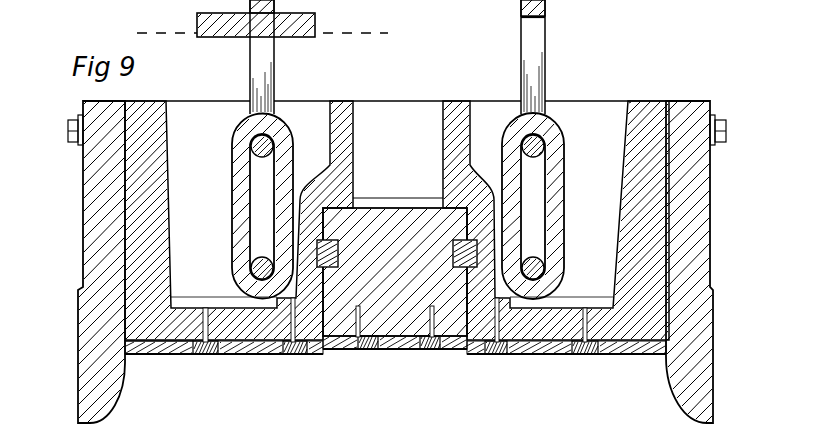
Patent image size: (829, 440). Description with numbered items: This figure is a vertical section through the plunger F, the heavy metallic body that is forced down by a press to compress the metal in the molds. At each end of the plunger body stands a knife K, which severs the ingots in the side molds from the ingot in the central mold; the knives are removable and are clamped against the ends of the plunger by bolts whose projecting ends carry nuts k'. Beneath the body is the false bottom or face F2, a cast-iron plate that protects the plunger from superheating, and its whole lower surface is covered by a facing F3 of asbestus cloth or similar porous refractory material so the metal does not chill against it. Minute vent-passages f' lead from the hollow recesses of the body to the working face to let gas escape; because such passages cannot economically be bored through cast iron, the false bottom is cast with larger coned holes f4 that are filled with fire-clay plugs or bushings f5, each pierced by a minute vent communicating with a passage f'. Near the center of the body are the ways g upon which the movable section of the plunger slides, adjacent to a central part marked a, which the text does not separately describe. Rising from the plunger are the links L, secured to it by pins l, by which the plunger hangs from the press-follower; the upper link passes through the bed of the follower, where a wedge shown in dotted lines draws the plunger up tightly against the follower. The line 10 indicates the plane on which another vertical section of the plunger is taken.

The knives K is at (84, 203).
The nuts k' is at (396, 131).
The links L is at (553, 62).
The plunger F is at (396, 205).
The false bottom F2 is at (252, 352).
The facing F3 is at (150, 357).
The vent-passages f' is at (396, 336).
The coned holes f4 is at (188, 357).
The plugs or bushings f5 is at (293, 356).
The ways g is at (321, 239).
The central block a is at (398, 222).
The pins l is at (537, 265).
The section line 10 is at (270, 18).